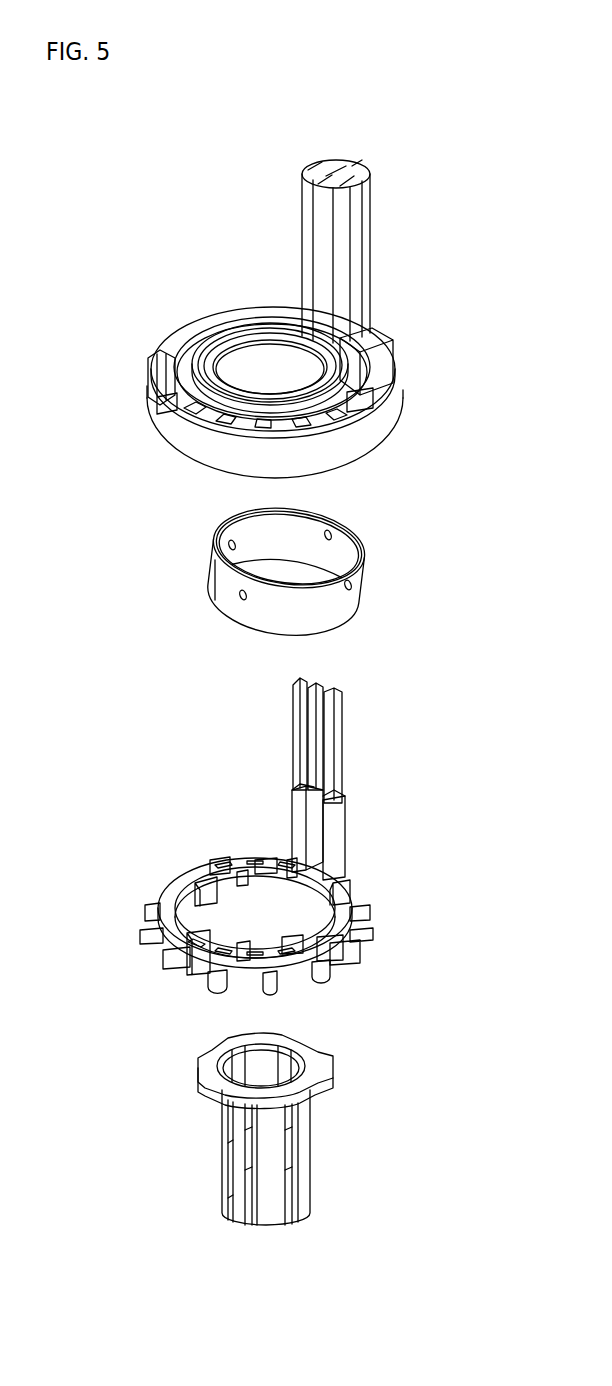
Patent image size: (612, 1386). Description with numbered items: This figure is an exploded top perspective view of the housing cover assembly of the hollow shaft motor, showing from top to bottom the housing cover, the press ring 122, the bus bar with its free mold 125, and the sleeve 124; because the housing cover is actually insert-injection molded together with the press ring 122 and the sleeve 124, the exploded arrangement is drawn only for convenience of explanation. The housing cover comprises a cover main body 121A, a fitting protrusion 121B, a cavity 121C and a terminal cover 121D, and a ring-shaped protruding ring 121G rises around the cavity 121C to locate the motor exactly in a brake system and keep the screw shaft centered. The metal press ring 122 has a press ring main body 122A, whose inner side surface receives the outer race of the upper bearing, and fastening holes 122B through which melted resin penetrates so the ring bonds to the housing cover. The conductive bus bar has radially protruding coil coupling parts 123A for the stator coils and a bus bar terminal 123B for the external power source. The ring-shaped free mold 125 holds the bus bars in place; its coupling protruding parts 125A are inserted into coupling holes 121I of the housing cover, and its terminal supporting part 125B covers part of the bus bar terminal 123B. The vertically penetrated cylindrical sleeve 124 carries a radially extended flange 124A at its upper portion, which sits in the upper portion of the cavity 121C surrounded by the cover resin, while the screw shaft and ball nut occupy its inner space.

The cover main body 121A is at (363, 433).
The fitting protrusion 121B is at (383, 416).
The cavity 121C is at (268, 373).
The terminal cover 121D is at (359, 226).
The protruding ring 121G is at (213, 311).
The coupling hole 121I is at (160, 406).
The press ring 122 is at (293, 567).
The press ring main body 122A is at (217, 588).
The fastening hole 122B is at (334, 534).
The coil coupling part 123A is at (163, 962).
The bus bar terminal 123B is at (341, 721).
The sleeve 124 is at (282, 1128).
The flange 124A is at (323, 1060).
The free mold 125 is at (240, 857).
The coupling protruding part 125A is at (212, 857).
The terminal supporting part 125B is at (347, 803).